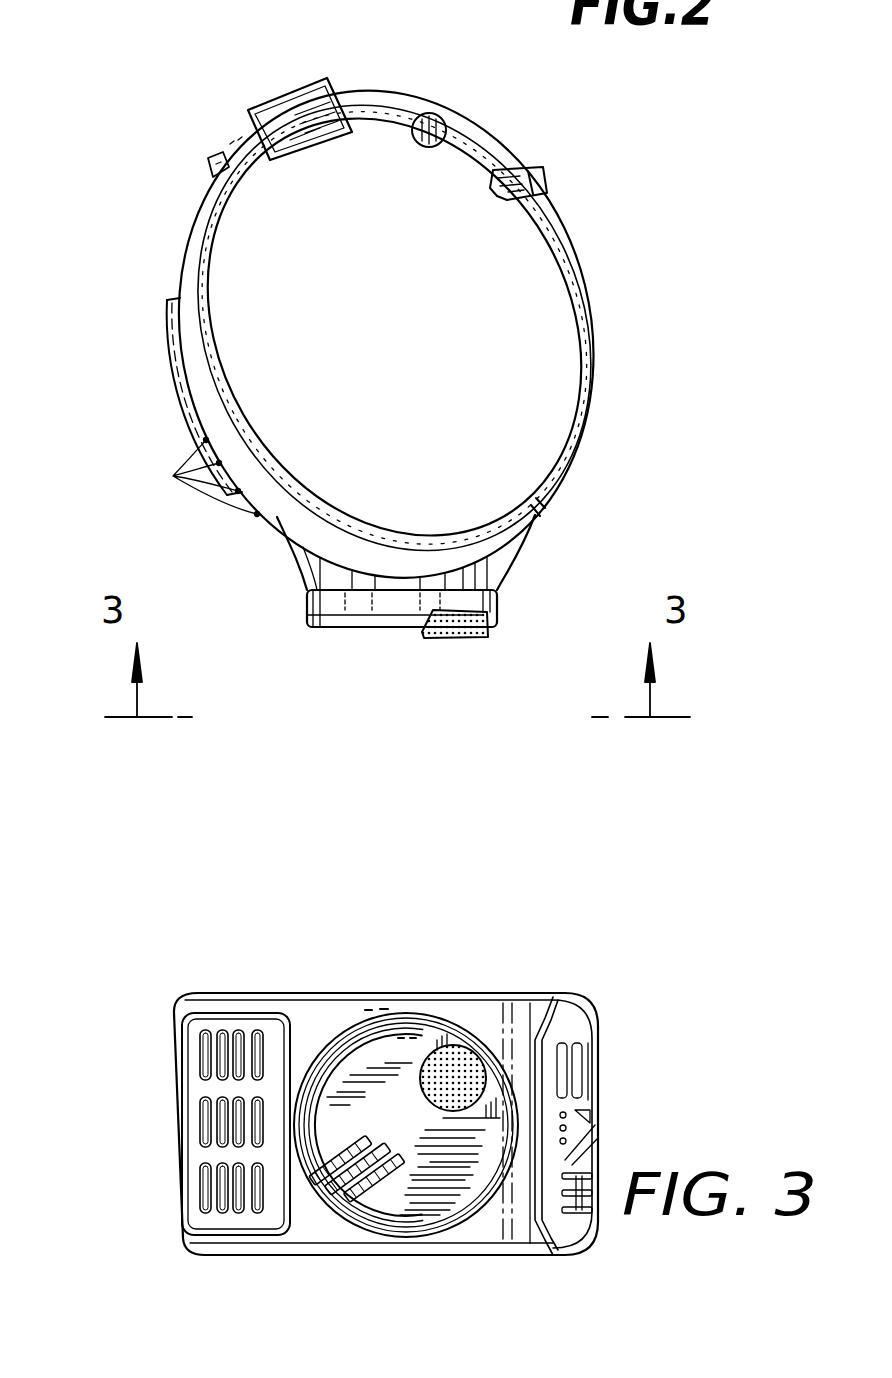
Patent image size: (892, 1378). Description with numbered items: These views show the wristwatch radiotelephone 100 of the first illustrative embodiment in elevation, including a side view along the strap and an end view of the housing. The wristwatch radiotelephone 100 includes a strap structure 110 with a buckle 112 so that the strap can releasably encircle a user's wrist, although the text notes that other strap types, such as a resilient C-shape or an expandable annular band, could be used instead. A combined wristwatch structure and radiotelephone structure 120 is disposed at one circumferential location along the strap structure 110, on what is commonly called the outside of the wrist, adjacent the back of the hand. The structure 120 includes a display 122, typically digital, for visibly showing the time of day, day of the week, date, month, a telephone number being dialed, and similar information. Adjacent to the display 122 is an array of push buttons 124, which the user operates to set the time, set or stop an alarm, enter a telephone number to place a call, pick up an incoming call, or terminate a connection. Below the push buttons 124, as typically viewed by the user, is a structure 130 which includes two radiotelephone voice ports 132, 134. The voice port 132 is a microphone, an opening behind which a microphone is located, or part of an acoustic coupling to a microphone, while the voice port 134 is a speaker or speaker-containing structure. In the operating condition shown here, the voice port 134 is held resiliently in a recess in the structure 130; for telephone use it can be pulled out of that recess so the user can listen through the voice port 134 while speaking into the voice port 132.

In FIG. 2, the wristwatch radiotelephone 100 is at (134, 134).
In FIG. 3, the wristwatch radiotelephone 100 is at (713, 1065).
In FIG. 2, the strap structure 110 is at (597, 347).
In FIG. 2, the buckle 112 is at (537, 167).
In FIG. 2, the combined wristwatch structure and radiotelephone structure 120 is at (307, 562).
In FIG. 3, the combined wristwatch structure and radiotelephone structure 120 is at (325, 1017).
In FIG. 2, the display 122 is at (172, 336).
In FIG. 2, the push buttons 124 is at (173, 476).
In FIG. 3, the push buttons 124 is at (200, 1177).
In FIG. 2, the structure 130 is at (330, 607).
In FIG. 3, the structure 130 is at (442, 1187).
In FIG. 3, the voice port 132 is at (360, 1182).
In FIG. 2, the voice port 134 is at (458, 640).
In FIG. 3, the voice port 134 is at (447, 1050).